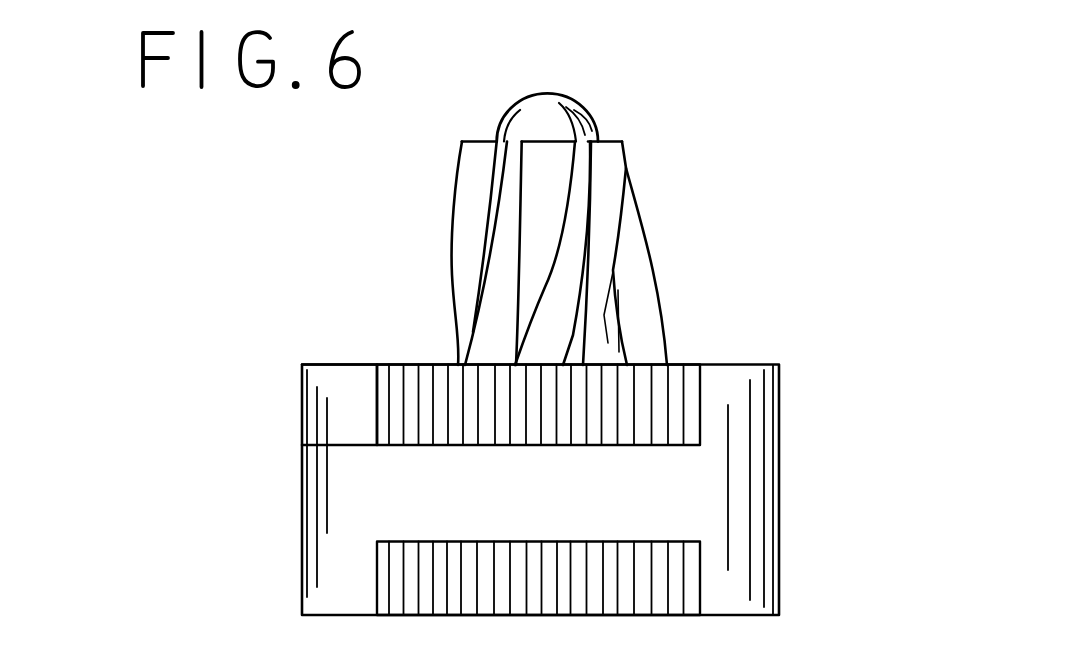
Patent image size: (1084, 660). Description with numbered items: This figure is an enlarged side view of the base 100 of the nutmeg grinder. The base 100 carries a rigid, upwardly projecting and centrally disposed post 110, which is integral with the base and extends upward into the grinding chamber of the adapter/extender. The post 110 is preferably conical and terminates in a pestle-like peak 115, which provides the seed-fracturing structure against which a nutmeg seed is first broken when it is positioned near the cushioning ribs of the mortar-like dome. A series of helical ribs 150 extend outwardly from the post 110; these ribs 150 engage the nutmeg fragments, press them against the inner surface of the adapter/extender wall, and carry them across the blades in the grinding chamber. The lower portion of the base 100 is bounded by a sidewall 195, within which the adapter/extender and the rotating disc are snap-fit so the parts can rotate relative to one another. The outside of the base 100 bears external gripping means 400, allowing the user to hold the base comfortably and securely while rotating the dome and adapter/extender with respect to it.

The base 100 is at (302, 540).
The post 110 is at (561, 132).
The peak 115 is at (543, 107).
The helical ribs 150 is at (469, 184).
The sidewall 195 is at (333, 363).
The external gripping means 400 is at (698, 393).